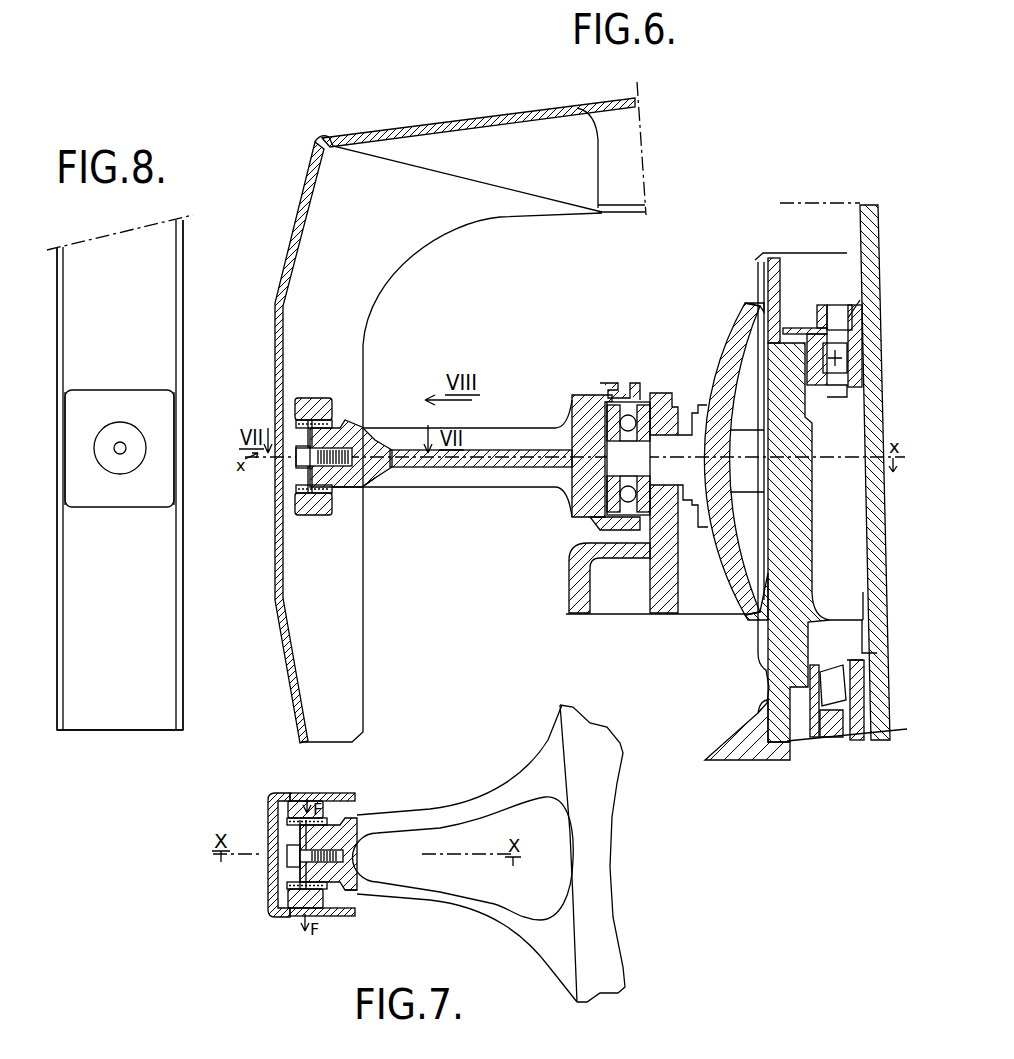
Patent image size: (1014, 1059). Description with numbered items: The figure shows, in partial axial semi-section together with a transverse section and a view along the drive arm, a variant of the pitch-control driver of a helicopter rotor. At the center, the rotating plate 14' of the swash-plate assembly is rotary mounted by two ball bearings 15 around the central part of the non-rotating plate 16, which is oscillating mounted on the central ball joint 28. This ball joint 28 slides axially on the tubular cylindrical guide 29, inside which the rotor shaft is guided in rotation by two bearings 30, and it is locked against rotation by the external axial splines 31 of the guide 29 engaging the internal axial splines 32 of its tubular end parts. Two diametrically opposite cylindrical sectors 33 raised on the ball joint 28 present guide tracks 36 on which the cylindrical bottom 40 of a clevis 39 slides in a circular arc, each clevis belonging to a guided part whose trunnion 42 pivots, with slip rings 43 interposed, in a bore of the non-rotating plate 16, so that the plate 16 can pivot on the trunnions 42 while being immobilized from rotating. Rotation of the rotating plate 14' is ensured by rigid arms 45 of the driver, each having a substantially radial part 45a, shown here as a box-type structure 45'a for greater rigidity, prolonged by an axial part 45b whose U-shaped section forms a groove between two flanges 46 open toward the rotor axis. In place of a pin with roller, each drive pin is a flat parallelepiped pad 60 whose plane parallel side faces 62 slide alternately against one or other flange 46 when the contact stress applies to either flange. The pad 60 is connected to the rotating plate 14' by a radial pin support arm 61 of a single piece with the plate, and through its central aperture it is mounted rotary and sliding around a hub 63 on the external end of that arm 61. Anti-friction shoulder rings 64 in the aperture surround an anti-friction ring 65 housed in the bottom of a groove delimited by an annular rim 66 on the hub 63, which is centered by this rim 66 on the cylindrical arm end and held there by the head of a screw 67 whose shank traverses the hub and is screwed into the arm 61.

In FIG. 6, the rotating plate 14' is at (467, 465).
In FIG. 7, the rotating plate 14' is at (565, 853).
In FIG. 6, the ball bearings 15 is at (616, 418).
In FIG. 6, the non-rotating plate 16 is at (613, 547).
In FIG. 6, the central ball joint 28 is at (750, 397).
In FIG. 6, the tubular cylindrical guide 29 is at (780, 703).
In FIG. 6, the bearings 30 is at (840, 304).
In FIG. 6, the axial splines 31 is at (765, 270).
In FIG. 6, the internal axial splines 32 is at (758, 330).
In FIG. 6, the cylindrical sectors 33 is at (343, 630).
In FIG. 6, the guide track 36 is at (728, 338).
In FIG. 6, the clevis 39 is at (703, 398).
In FIG. 6, the clevis bottom 40 is at (707, 495).
In FIG. 6, the trunnion 42 is at (652, 405).
In FIG. 6, the slip rings 43 is at (662, 557).
In FIG. 6, the rigid arms 45 is at (431, 173).
In FIG. 6, the radial arm part 45a is at (491, 122).
In FIG. 6, the axial arm part 45b is at (282, 348).
In FIG. 8, the axial arm part 45b is at (194, 275).
In FIG. 7, the axial arm part 45b is at (270, 840).
In FIG. 6, the box-type structure 45'a is at (621, 236).
In FIG. 8, the flanges 46 is at (62, 300).
In FIG. 7, the flanges 46 is at (357, 793).
In FIG. 6, the pad 60 is at (312, 408).
In FIG. 8, the pad 60 is at (143, 392).
In FIG. 7, the pad 60 is at (280, 917).
In FIG. 6, the pin support arm 61 is at (463, 465).
In FIG. 7, the pin support arm 61 is at (446, 822).
In FIG. 8, the side faces 62 is at (66, 429).
In FIG. 6, the hub 63 is at (343, 440).
In FIG. 7, the hub 63 is at (298, 828).
In FIG. 6, the anti-friction shoulder rings 64 is at (300, 421).
In FIG. 7, the anti-friction shoulder rings 64 is at (297, 800).
In FIG. 6, the anti-friction ring 65 is at (337, 497).
In FIG. 7, the anti-friction ring 65 is at (357, 882).
In FIG. 6, the annular rim 66 is at (297, 489).
In FIG. 7, the annular rim 66 is at (290, 887).
In FIG. 6, the screw 67 is at (345, 463).
In FIG. 7, the screw 67 is at (358, 850).